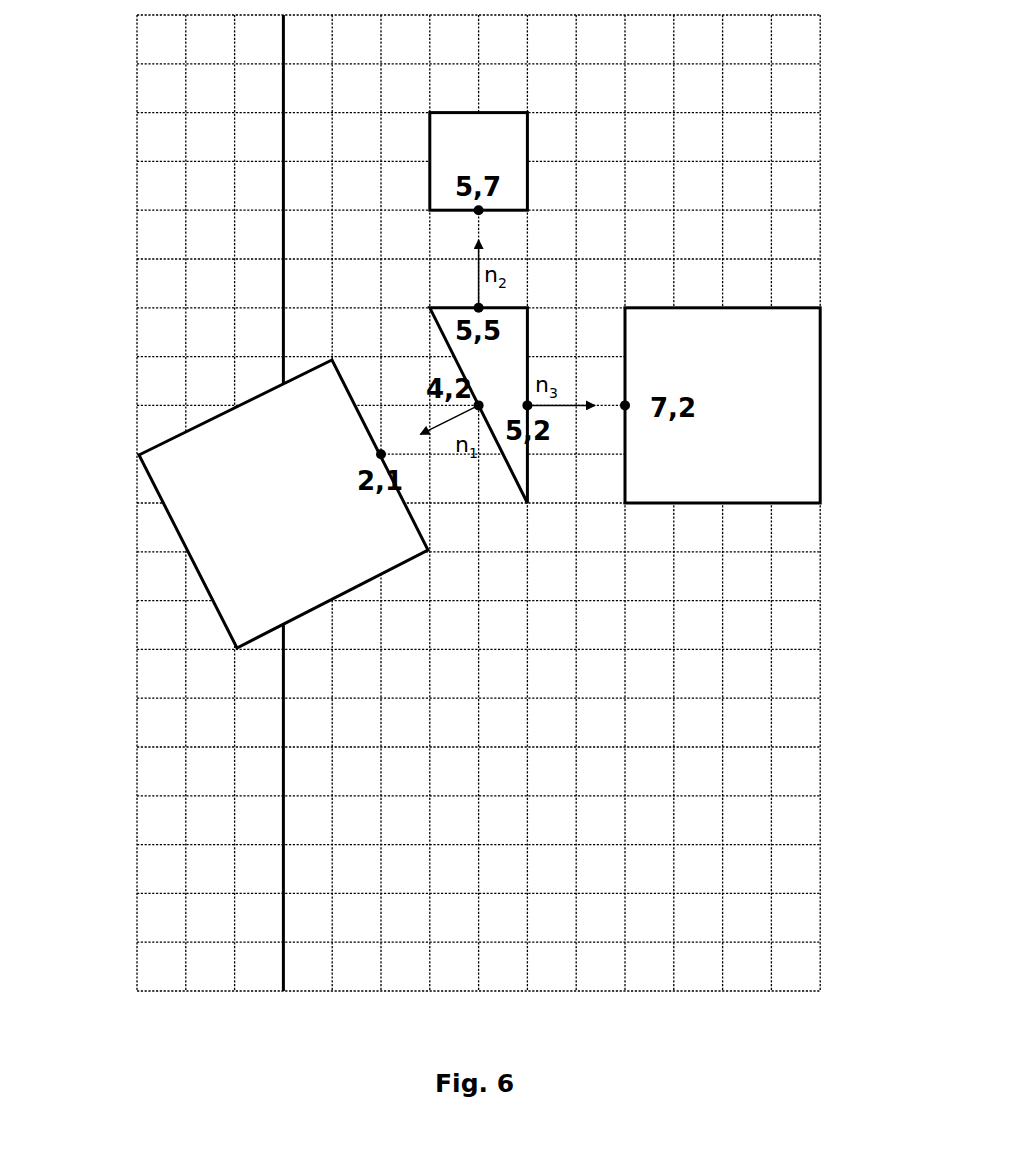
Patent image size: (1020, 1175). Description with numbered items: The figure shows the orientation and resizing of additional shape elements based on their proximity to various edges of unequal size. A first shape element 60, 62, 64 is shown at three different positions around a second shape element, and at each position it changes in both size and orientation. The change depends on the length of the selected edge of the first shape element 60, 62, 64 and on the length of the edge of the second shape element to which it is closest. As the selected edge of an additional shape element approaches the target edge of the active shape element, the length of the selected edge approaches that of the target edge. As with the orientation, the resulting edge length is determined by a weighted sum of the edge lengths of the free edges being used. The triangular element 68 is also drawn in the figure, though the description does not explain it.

The first shape element 60 is at (283, 500).
The first shape element 62 is at (473, 153).
The first shape element 64 is at (732, 412).
The triangular object 68 is at (503, 383).